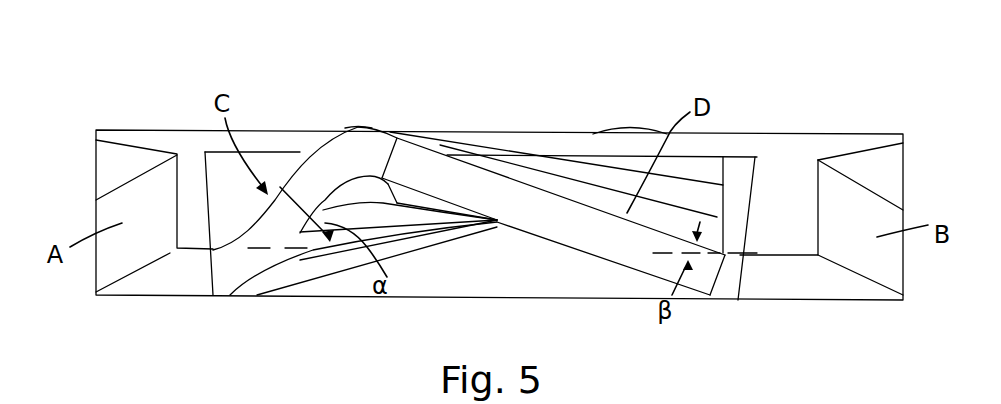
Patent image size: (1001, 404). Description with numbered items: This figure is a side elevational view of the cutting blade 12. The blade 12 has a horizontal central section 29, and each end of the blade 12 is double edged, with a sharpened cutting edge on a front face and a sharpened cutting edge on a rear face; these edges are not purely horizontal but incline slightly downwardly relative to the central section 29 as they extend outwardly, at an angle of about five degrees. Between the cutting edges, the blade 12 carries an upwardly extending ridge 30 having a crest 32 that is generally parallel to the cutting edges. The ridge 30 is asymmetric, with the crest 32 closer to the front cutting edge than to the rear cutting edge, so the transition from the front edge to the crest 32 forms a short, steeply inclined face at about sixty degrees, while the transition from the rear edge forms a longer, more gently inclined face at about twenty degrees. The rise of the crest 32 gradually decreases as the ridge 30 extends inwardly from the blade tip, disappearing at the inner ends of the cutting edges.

The blade 12 is at (512, 86).
The central section 29 is at (538, 134).
The ridge 30 is at (324, 109).
The crest 32 is at (357, 127).